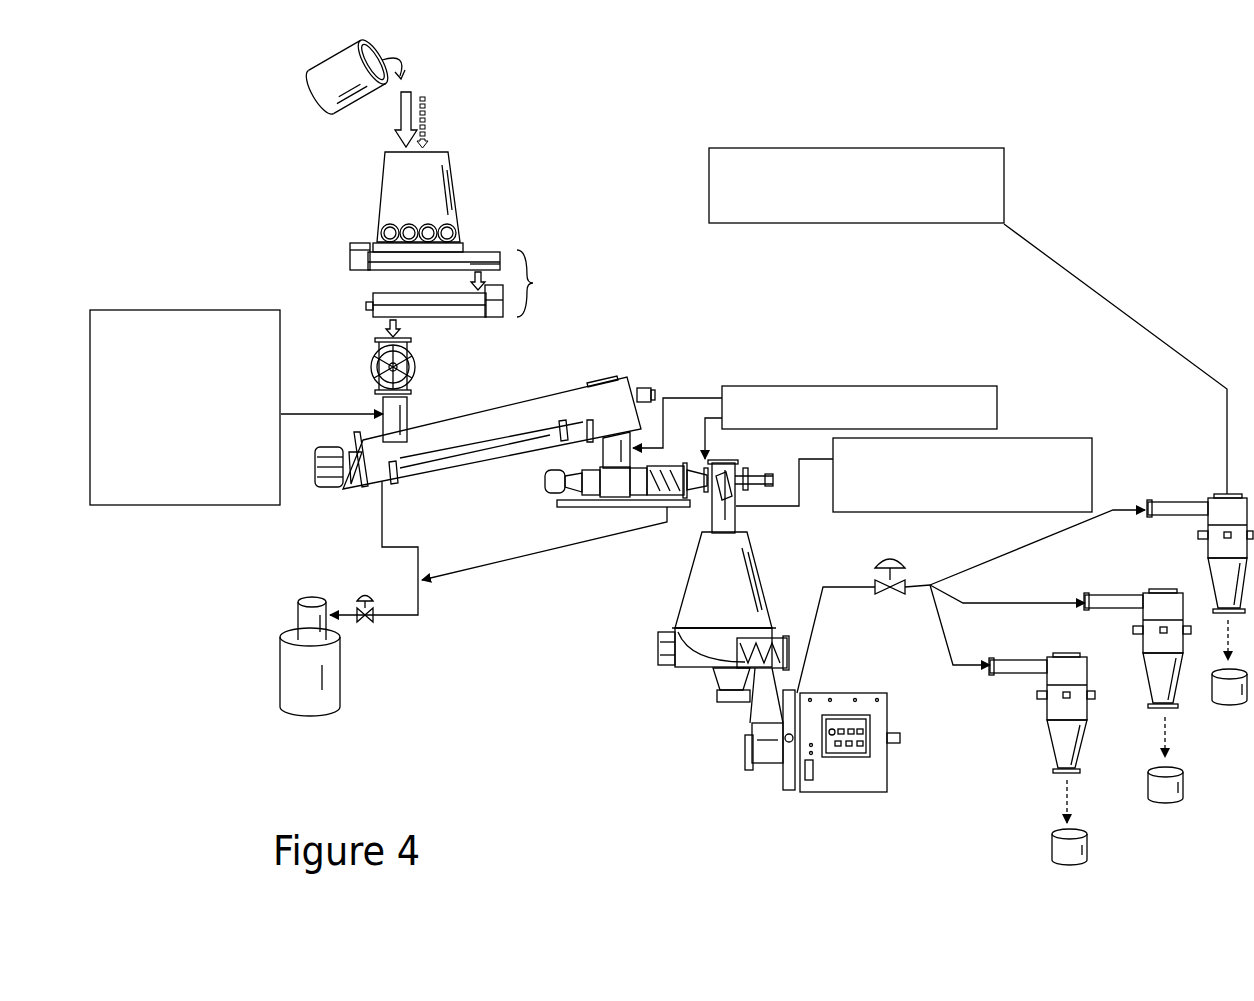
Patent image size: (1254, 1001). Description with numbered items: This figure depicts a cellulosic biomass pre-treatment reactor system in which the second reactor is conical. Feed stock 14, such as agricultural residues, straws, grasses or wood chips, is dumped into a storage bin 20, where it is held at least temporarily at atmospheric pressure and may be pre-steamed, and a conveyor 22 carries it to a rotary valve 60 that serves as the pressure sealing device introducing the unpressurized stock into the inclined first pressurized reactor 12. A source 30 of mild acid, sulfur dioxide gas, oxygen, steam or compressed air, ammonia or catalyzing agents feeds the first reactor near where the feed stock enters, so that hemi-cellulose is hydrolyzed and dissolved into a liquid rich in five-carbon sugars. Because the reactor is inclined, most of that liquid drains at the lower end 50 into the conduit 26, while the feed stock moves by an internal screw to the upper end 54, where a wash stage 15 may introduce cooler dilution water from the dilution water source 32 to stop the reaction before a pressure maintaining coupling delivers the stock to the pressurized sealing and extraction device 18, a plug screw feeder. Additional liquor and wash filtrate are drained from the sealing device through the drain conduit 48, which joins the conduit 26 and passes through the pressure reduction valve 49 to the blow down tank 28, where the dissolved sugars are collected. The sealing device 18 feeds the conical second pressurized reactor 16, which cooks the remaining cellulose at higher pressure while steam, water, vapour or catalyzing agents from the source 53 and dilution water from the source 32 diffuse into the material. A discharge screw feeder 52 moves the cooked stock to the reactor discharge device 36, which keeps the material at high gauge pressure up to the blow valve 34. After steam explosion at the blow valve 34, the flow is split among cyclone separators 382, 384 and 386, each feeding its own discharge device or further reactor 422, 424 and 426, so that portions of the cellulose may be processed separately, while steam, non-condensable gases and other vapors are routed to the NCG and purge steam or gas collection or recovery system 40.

The feed stock 14 is at (321, 57).
The storage bin 20 is at (383, 183).
The conveyor 22 is at (456, 290).
The rotary valve 60 is at (416, 370).
The source of mild acid, SO2, oxygen, steam, compressed air, ammonia or catalyzing a 30 is at (178, 506).
The first pressurized reactor 12 is at (556, 392).
The upper end 54 is at (630, 374).
The wash stage 15 is at (603, 450).
The pressurized sealing and extraction device 18 is at (678, 462).
The second pressurized reactor 16 is at (760, 568).
The discharge device 52 is at (745, 742).
The reactor discharge device 36 is at (860, 693).
The blow valve 34 is at (907, 562).
The NCG and purge steam/gas collection or recovery system 40 is at (787, 148).
The dilution water source 32 is at (785, 386).
The source of steam, water, vapour or catalyzing agents 53 is at (1093, 446).
The lower end 50 is at (380, 493).
The conduit 26 is at (419, 552).
The drain conduit 48 is at (545, 553).
The pressure reduction valve 49 is at (376, 626).
The blow down tank 28 is at (280, 680).
The cyclone separator 382 is at (1047, 709).
The cyclone separator 384 is at (1143, 619).
The cyclone separator 386 is at (1208, 545).
The discharge device and further reactor 422 is at (1064, 866).
The discharge device and further reactor 424 is at (1166, 803).
The discharge device and further reactor 426 is at (1236, 705).